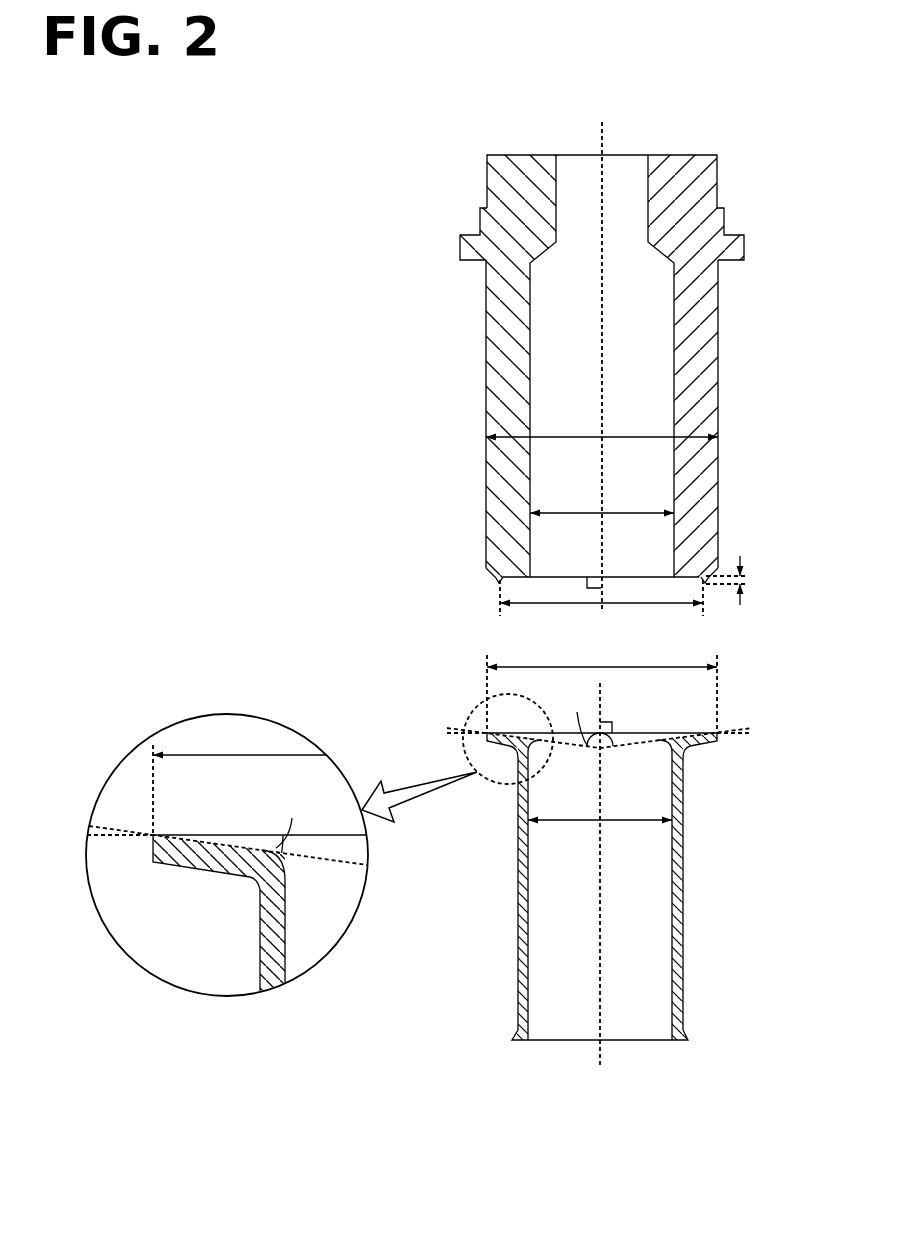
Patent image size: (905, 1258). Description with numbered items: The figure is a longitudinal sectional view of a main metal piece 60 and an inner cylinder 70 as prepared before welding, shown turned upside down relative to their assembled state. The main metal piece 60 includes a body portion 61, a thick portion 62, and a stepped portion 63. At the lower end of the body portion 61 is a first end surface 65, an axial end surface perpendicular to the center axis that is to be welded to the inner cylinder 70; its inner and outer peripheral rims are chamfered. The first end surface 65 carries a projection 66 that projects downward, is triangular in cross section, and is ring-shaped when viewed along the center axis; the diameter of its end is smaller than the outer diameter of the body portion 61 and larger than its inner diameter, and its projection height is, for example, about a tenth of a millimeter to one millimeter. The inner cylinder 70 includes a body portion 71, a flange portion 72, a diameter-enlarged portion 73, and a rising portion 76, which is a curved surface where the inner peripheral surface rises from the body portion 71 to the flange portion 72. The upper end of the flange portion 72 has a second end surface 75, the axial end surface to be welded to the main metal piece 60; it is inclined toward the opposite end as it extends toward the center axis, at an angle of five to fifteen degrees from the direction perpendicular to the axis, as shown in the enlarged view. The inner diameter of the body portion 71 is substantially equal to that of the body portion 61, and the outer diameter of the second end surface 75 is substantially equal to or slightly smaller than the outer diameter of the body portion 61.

The main metal piece 60 is at (394, 136).
The body portion 61 is at (490, 381).
The thick portion 62 is at (500, 188).
The stepped portion 63 is at (483, 221).
The first end surface 65 is at (493, 578).
The projection 66 is at (497, 583).
The inner cylinder 70 is at (388, 676).
The body portion 71 is at (684, 857).
The flange portion 72 is at (693, 746).
The diameter-enlarged portion 73 is at (686, 1033).
The second end surface 75 is at (691, 735).
The rising portion 76 is at (677, 742).